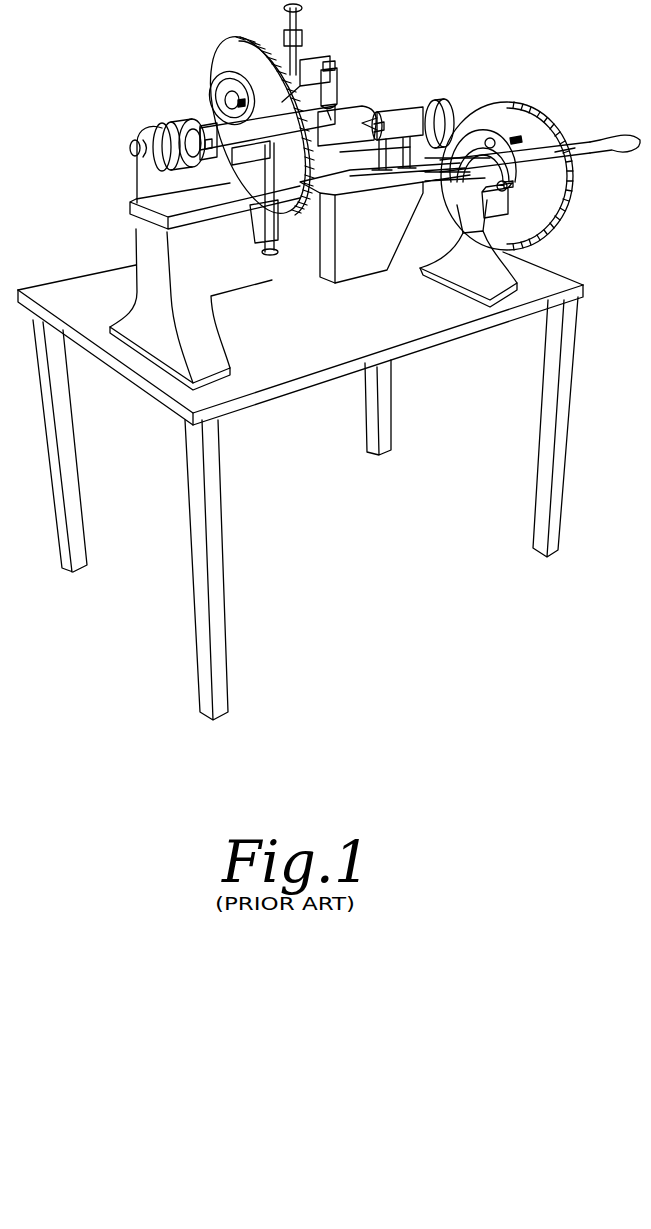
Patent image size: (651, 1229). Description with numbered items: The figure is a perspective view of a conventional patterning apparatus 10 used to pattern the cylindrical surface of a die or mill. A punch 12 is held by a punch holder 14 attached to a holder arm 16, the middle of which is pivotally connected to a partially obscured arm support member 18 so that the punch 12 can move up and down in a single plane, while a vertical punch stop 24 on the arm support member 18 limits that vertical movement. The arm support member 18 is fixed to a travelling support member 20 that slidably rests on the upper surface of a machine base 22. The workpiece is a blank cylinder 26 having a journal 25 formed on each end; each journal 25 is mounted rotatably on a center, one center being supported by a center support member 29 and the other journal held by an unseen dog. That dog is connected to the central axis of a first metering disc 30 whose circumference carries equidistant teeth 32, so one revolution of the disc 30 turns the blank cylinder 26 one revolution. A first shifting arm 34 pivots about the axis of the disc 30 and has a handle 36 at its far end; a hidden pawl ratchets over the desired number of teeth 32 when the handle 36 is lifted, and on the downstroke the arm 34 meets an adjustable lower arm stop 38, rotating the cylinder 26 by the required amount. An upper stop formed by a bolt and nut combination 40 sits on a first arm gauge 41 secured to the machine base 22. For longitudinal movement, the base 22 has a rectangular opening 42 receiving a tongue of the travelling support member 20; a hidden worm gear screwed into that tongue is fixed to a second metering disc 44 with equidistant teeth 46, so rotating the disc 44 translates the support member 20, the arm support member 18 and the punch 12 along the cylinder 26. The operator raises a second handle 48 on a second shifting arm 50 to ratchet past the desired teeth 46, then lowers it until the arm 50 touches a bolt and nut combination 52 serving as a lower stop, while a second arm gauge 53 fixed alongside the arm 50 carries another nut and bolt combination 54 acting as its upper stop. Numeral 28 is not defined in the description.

The conventional patterning apparatus 10 is at (104, 56).
The punch 12 is at (340, 106).
The punch holder 14 is at (335, 70).
The holder arm 16 is at (308, 60).
The arm support member 18 is at (316, 108).
The travelling support member 20 is at (371, 268).
The machine base 22 is at (306, 261).
The vertical punch stop 24 is at (300, 44).
The journal 25 is at (364, 132).
The blank cylinder 26 is at (372, 118).
The lower rod 28 is at (376, 150).
The center support member 29 is at (402, 108).
The first metering disc 30 is at (232, 48).
The teeth 32 is at (266, 45).
The first shifting arm 34 is at (205, 112).
The handle 36 is at (364, 112).
The lower arm stop 38 is at (226, 163).
The bolt and nut combination 40 is at (225, 96).
The first arm gauge 41 is at (212, 74).
The rectangular opening 42 is at (462, 178).
The second metering disc 44 is at (567, 194).
The teeth 46 is at (572, 160).
The second handle 48 is at (612, 138).
The second shifting arm 50 is at (580, 148).
The bolt and nut combination 52 is at (518, 194).
The second arm gauge 53 is at (474, 128).
The nut and bolt combination 54 is at (515, 138).